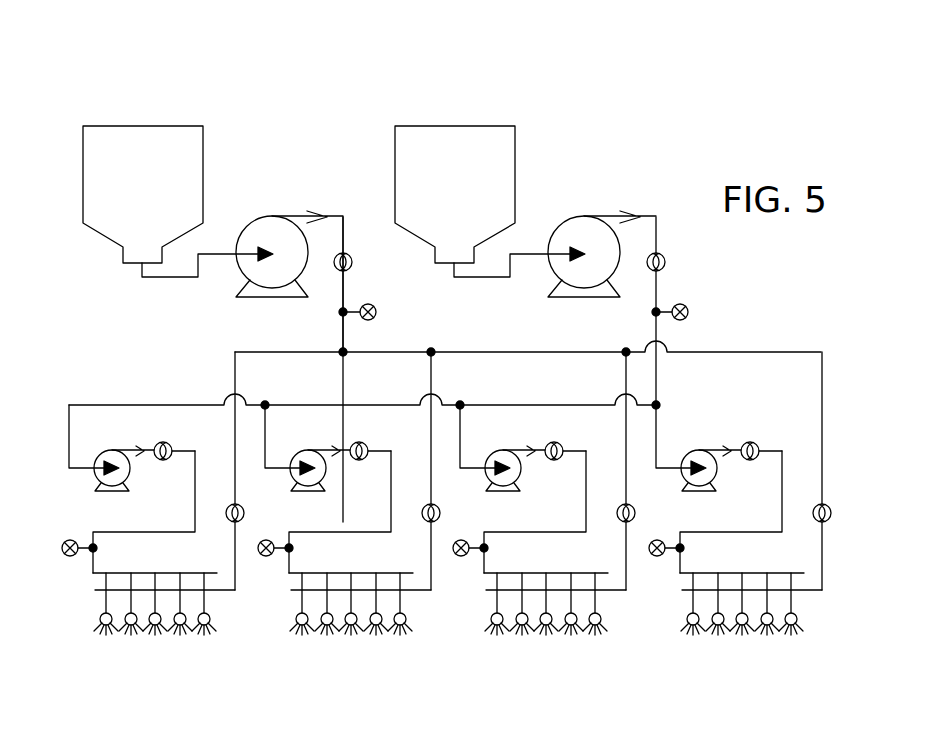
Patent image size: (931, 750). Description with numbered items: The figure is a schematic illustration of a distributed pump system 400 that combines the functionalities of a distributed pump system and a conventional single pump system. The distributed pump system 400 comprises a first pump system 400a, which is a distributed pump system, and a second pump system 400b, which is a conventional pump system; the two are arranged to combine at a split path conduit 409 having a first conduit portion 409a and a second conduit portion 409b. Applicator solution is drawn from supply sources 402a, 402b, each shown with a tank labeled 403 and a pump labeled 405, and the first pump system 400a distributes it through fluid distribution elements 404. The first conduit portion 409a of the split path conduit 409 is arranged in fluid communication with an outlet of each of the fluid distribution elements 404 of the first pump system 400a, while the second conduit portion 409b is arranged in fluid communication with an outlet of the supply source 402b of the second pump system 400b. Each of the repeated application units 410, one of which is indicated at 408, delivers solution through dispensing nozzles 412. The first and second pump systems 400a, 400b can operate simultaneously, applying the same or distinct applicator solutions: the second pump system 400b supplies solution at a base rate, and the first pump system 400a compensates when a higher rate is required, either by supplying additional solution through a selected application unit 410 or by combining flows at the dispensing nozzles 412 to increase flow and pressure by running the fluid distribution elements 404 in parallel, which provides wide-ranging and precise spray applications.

The distributed pump system 400 is at (736, 57).
The first pump system 400a is at (656, 331).
The second pump system 400b is at (343, 336).
The supply source 402a is at (271, 302).
The supply source 402b is at (479, 187).
The tank 403 is at (167, 187).
The fluid distribution elements 404 is at (110, 451).
The supply pump 405 is at (245, 224).
The spray unit 408 is at (67, 512).
The split path conduit 409 is at (777, 623).
The first conduit portion 409a is at (117, 573).
The second conduit portion 409b is at (225, 591).
The application unit 410 is at (83, 582).
The dispensing nozzles 412 is at (149, 647).